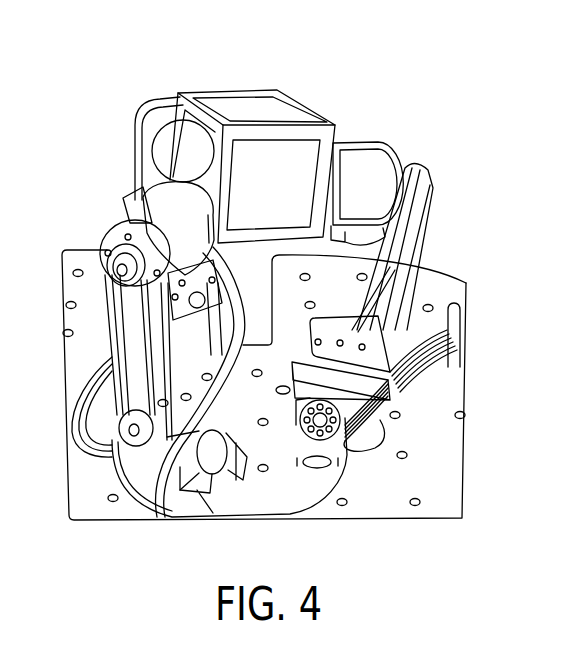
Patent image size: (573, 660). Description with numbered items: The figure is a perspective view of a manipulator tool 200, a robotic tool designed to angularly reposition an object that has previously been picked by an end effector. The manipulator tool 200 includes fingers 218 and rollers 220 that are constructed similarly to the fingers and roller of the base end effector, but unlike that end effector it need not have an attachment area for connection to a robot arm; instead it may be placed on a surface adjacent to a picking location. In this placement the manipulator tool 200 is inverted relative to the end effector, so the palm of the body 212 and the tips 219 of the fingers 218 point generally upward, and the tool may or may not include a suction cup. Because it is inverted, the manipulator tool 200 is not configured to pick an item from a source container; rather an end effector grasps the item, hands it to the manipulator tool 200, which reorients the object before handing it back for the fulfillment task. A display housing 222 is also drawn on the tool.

The manipulator tool 200 is at (452, 246).
The body 212 is at (333, 470).
The fingers 218 is at (120, 342).
The tips 219 is at (420, 173).
The rollers 220 is at (140, 197).
The display housing 222 is at (203, 90).